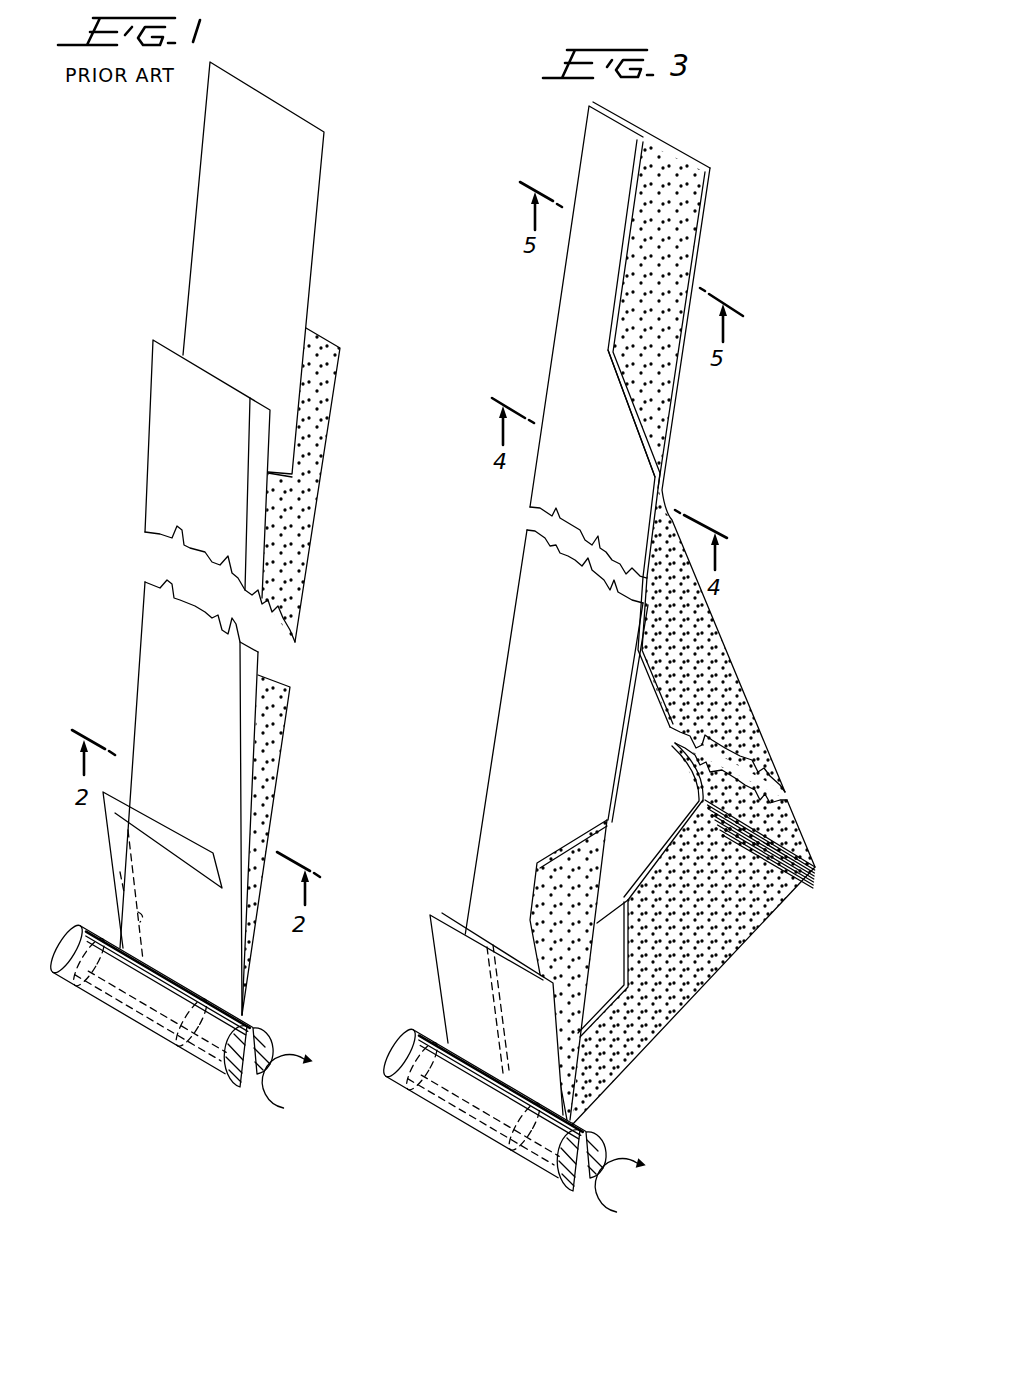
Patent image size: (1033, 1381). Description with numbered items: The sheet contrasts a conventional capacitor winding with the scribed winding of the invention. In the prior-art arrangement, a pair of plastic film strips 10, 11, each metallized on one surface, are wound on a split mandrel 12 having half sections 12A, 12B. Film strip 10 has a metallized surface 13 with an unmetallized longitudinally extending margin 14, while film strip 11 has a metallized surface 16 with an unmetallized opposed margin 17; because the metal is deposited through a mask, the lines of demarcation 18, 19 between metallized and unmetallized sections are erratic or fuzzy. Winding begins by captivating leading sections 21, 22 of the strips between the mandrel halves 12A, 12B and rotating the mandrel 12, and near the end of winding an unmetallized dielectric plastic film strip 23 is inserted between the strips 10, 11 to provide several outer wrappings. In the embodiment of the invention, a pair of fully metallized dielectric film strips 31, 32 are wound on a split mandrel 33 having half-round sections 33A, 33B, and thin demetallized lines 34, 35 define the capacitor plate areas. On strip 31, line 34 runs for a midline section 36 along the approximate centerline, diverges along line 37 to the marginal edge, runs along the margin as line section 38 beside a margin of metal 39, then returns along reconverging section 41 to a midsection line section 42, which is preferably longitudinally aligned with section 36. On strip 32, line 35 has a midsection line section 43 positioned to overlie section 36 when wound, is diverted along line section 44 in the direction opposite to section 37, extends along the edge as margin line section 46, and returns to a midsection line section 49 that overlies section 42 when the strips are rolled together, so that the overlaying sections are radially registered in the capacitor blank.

In FIG. 1, the metallized film strip 10 is at (207, 538).
In FIG. 1, the metallized film strip 11 is at (306, 610).
In FIG. 1, the split mandrel 12 is at (188, 1029).
In FIG. 1, the mandrel half section 12A is at (238, 1088).
In FIG. 1, the mandrel half section 12B is at (263, 1050).
In FIG. 1, the metallized surface 13 is at (165, 687).
In FIG. 1, the unmetallized longitudinally extending margin 14 is at (259, 541).
In FIG. 1, the metallized surface 16 is at (282, 712).
In FIG. 1, the unmetallized longitudinally extending opposed margin 17 is at (128, 881).
In FIG. 1, the line of demarcation 18 is at (247, 505).
In FIG. 1, the line of demarcation 19 is at (140, 916).
In FIG. 1, the leading section 21 is at (118, 817).
In FIG. 1, the leading section 22 is at (135, 847).
In FIG. 1, the unmetallized dielectric plastic film strip 23 is at (197, 203).
In FIG. 3, the metallized dielectric film strip 31 is at (514, 626).
In FIG. 3, the metallized dielectric film strip 32 is at (742, 679).
In FIG. 3, the split mandrel 33 is at (529, 1123).
In FIG. 3, the half-round section 33A is at (571, 1192).
In FIG. 3, the half-round section 33B is at (600, 1152).
In FIG. 3, the demetallized line 34 is at (575, 841).
In FIG. 3, the demetallized line 35 is at (637, 944).
In FIG. 3, the midline section 36 is at (527, 930).
In FIG. 3, the diverging line 37 is at (553, 852).
In FIG. 3, the demetallized line section 38 is at (616, 768).
In FIG. 3, the margin of metal 39 is at (621, 787).
In FIG. 3, the reconverging line section 41 is at (628, 413).
In FIG. 3, the midline section 42 is at (622, 258).
In FIG. 3, the demetallized line section 43 is at (604, 1008).
In FIG. 3, the diverted line section 44 is at (626, 921).
In FIG. 3, the margin line section 46 is at (681, 843).
In FIG. 3, the midsection line section 49 is at (650, 138).